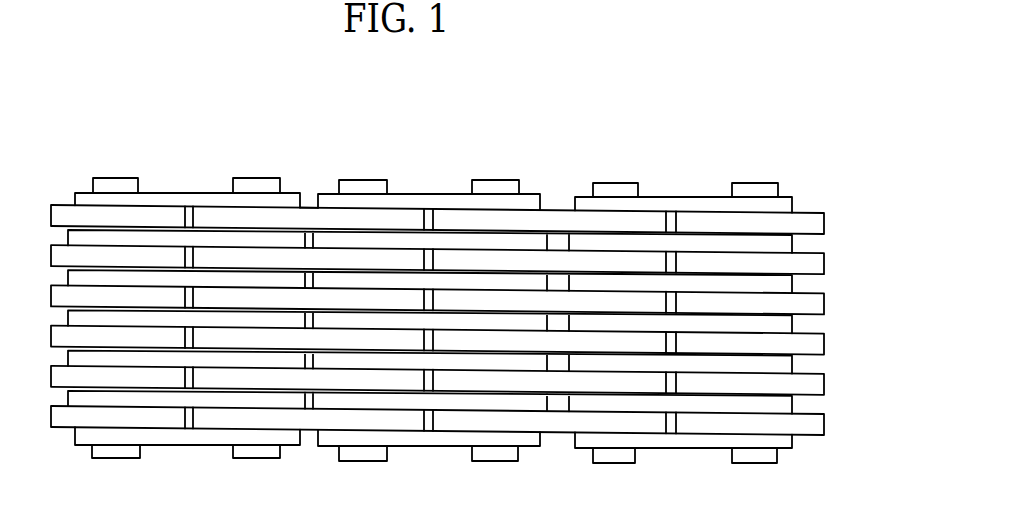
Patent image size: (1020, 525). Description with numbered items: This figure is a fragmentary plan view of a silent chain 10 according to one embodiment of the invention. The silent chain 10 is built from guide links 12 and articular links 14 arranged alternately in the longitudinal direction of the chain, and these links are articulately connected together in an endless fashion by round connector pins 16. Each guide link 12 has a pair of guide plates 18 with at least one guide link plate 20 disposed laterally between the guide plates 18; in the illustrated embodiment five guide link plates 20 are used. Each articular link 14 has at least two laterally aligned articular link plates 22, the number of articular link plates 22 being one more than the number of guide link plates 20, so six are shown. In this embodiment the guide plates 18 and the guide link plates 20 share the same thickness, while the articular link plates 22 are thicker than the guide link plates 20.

The silent chain 10 is at (538, 138).
The guide link 12 is at (199, 187).
The articular link 14 is at (307, 198).
The round connector pin 16 is at (622, 192).
The guide plate 18 is at (152, 202).
The guide link plate 20 is at (780, 245).
The articular link plate 22 is at (813, 383).